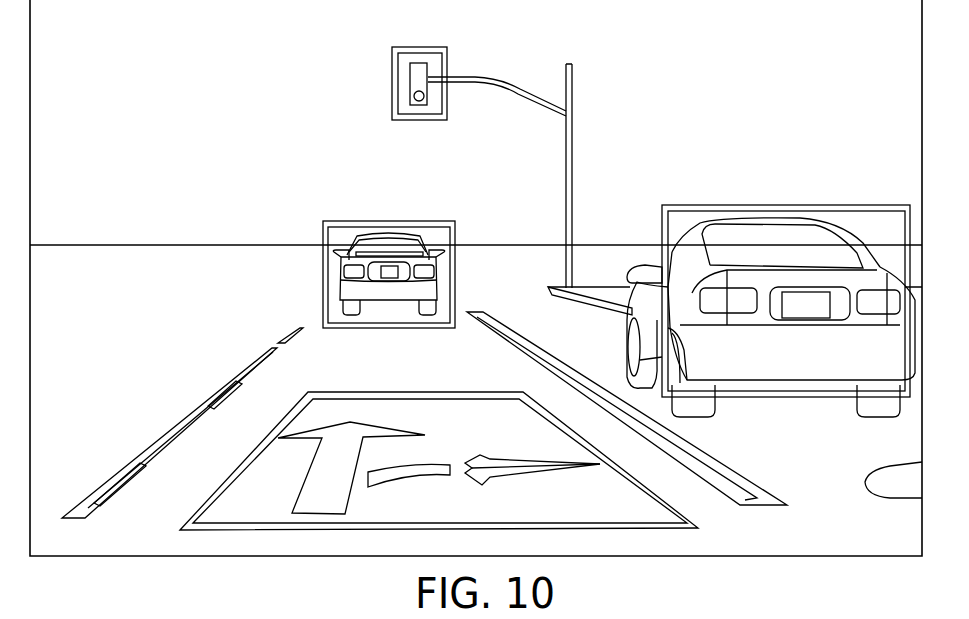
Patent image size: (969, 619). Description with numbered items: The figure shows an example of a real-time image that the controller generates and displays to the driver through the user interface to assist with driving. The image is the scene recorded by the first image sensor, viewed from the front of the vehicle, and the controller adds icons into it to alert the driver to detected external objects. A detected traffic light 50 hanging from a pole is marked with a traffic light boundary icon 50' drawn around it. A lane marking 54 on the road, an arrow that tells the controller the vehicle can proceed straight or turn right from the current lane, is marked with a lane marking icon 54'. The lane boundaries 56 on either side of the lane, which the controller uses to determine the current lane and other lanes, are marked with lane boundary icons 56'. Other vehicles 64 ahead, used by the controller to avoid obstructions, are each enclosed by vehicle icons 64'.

The traffic light 50 is at (382, 79).
The traffic light boundary icon 50' is at (386, 84).
The other vehicles 64 is at (624, 286).
The vehicle icons 64' is at (584, 270).
The lane marking 54 is at (439, 458).
The lane marking icon 54' is at (439, 440).
The lane boundaries 56 is at (419, 412).
The lane boundary icons 56' is at (443, 412).